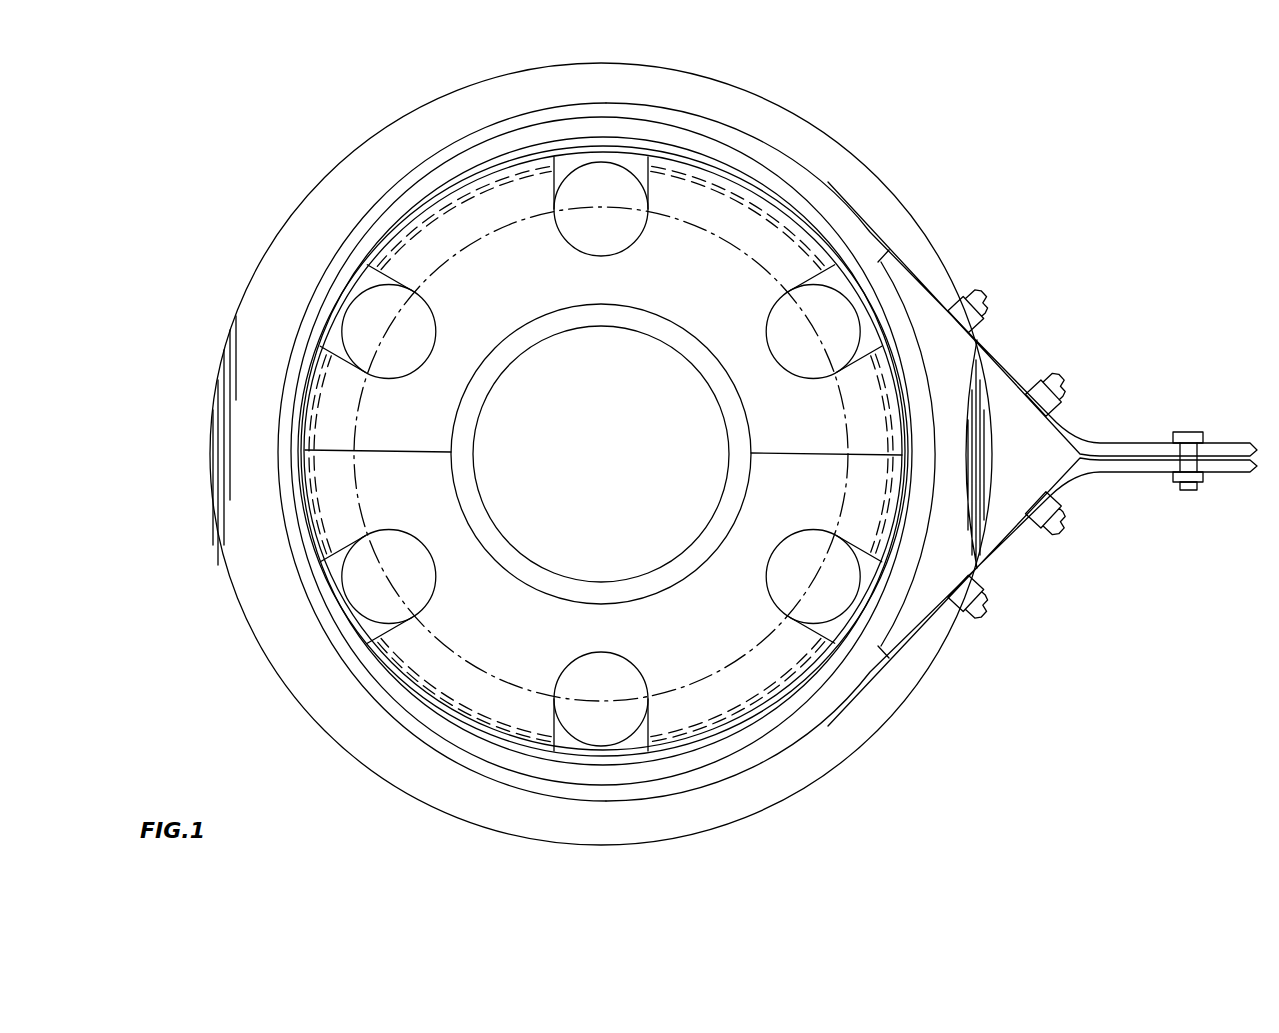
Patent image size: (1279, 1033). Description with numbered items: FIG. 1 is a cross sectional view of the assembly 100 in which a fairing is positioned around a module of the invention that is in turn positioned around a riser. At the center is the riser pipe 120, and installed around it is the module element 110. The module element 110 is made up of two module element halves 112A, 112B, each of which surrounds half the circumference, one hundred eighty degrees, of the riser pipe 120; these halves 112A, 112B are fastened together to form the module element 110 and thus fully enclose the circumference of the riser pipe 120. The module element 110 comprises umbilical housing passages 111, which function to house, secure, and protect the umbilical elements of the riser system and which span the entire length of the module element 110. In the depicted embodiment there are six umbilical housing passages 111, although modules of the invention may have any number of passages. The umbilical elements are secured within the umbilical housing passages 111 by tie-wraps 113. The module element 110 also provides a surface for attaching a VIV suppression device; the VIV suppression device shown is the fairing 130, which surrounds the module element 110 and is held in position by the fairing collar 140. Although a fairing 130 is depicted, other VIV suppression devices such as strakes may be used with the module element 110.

The coupling assembly 100 is at (238, 176).
The module element 110 is at (778, 702).
The umbilical housing passages 111 is at (833, 598).
The module element half 112A is at (365, 488).
The module element half 112B is at (368, 446).
The tie-wraps 113 is at (638, 752).
The riser pipe 120 is at (651, 578).
The fairing 130 is at (910, 252).
The fairing collar 140 is at (831, 131).